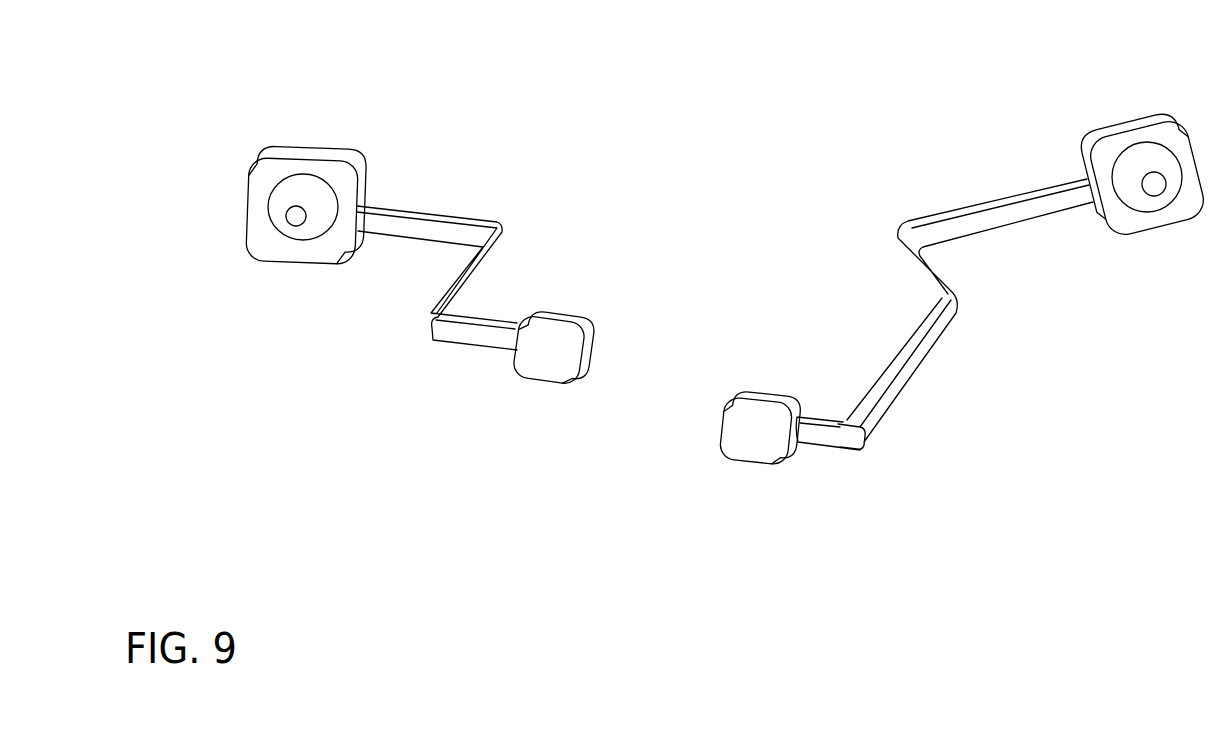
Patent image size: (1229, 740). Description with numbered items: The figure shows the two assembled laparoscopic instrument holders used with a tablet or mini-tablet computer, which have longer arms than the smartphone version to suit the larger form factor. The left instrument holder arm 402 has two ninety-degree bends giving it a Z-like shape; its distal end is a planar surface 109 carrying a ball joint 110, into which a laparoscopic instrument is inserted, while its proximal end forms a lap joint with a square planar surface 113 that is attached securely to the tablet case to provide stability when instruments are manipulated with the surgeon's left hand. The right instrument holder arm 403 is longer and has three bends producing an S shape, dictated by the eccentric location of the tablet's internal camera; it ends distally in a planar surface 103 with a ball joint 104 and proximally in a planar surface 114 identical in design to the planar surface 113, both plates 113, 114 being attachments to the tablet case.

The planar surface 109 is at (335, 138).
The ball joint 110 is at (268, 241).
The left instrument holder arm 402 is at (480, 199).
The planar surface 113 is at (531, 400).
The planar surface 103 is at (1107, 110).
The ball joint 104 is at (1144, 218).
The right instrument holder arm 403 is at (896, 206).
The planar surface 114 is at (722, 482).